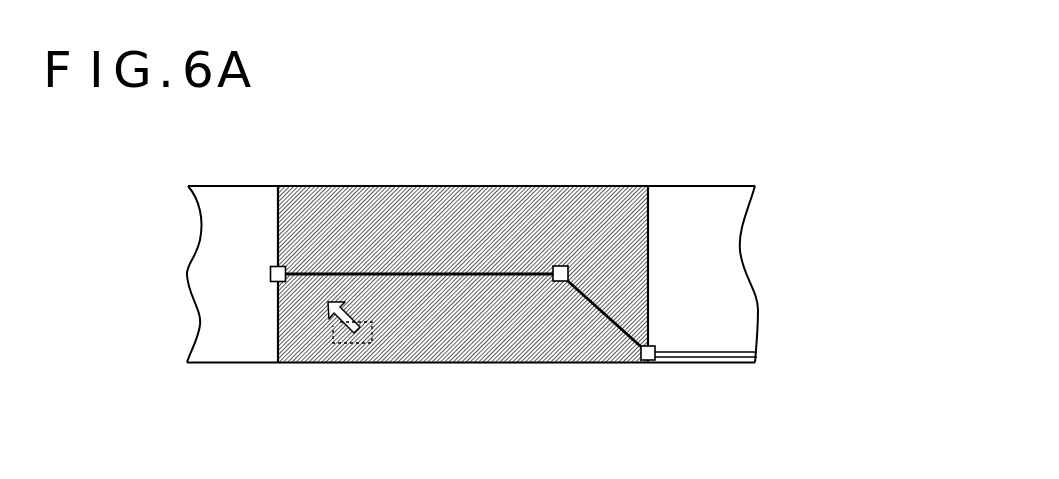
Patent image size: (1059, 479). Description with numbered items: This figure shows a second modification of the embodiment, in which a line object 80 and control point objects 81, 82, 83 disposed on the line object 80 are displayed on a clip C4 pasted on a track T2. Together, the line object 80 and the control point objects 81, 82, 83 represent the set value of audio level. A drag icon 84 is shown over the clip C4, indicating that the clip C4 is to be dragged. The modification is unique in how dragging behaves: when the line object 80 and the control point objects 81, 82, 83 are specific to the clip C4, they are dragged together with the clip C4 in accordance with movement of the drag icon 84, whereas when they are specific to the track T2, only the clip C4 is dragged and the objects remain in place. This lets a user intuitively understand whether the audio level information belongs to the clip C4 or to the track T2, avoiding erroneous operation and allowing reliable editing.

The line object 80 is at (350, 268).
The control point object 81 is at (268, 266).
The control point object 82 is at (558, 266).
The control point object 83 is at (648, 362).
The drag icon 84 is at (350, 366).
The clip C4 is at (590, 218).
The track T2 is at (712, 288).